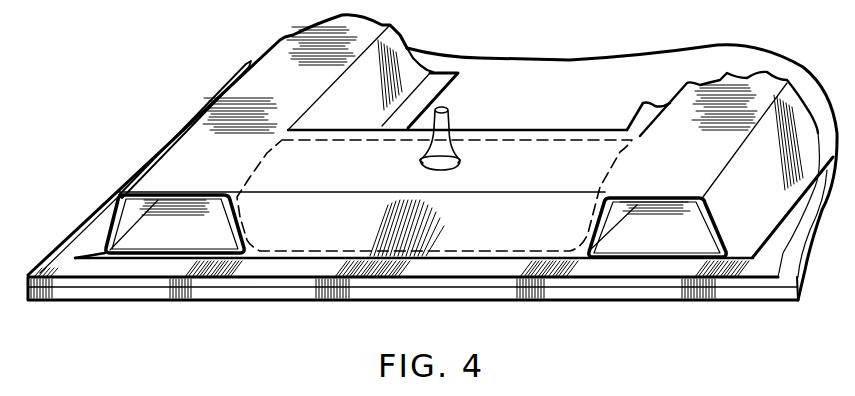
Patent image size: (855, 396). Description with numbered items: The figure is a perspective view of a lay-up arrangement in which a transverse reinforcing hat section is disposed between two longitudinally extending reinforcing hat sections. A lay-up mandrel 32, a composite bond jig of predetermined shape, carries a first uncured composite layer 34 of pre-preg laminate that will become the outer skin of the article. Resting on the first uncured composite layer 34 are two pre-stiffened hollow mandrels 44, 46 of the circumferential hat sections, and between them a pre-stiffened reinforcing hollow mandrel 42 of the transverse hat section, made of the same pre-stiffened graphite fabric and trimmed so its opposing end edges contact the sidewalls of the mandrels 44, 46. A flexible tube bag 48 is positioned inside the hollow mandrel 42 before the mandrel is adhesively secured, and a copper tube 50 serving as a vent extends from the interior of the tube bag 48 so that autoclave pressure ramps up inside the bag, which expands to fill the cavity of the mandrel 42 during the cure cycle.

The lay-up mandrel 32 is at (138, 302).
The first uncured composite layer 34 is at (242, 280).
The pre-stiffened reinforcing hollow mandrel 42 is at (522, 131).
The pre-stiffened hollow mandrel 44 is at (278, 39).
The pre-stiffened hollow mandrel 46 is at (728, 73).
The flexible tube bag 48 is at (557, 250).
The copper tube 50 is at (453, 106).